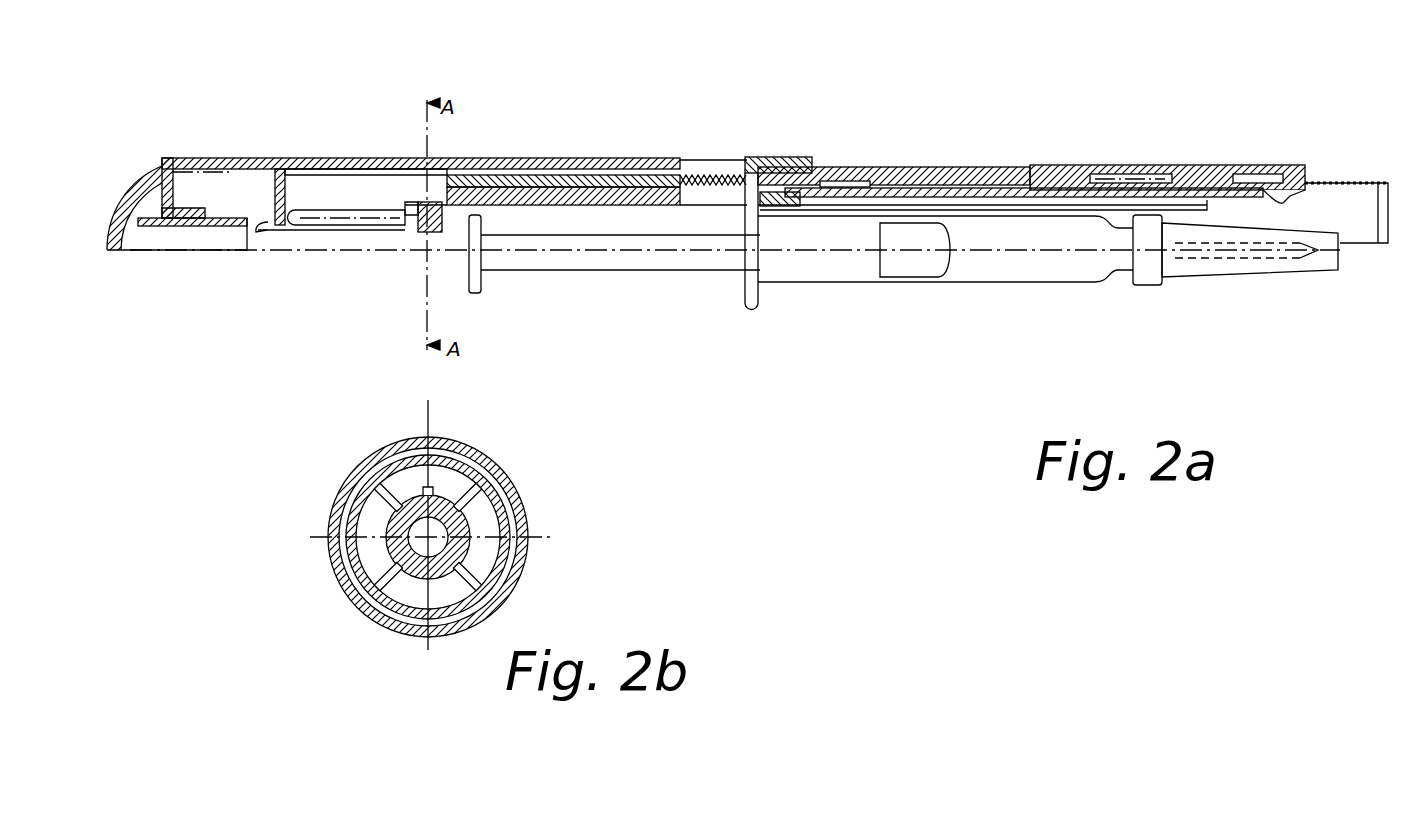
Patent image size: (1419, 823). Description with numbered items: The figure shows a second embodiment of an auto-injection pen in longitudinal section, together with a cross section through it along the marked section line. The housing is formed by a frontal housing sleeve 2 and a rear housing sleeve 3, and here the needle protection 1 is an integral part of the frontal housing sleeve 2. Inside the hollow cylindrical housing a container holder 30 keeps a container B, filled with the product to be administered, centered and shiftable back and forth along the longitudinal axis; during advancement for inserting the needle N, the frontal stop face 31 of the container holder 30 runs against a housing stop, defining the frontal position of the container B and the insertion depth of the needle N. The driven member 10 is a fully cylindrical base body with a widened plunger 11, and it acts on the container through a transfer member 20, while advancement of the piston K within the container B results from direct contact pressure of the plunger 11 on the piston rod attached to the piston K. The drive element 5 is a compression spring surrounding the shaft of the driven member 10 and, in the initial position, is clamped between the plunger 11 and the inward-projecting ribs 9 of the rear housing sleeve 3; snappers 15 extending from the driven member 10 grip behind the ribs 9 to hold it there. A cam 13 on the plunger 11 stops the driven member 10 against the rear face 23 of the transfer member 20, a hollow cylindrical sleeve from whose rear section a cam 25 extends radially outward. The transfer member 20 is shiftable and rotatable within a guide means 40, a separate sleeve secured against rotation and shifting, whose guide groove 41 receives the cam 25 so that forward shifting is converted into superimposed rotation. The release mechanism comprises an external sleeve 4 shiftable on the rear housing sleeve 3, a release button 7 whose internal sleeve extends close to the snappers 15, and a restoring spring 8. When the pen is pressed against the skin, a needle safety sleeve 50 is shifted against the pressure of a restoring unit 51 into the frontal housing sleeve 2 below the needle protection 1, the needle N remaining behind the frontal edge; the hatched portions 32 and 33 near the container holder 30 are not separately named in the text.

In FIG. 2A, the needle protection 1 is at (1244, 167).
In FIG. 2A, the frontal housing sleeve 2 is at (837, 173).
In FIG. 2A, the rear housing sleeve 3 is at (343, 160).
In FIG. 2B, the rear housing sleeve 3 is at (500, 480).
In FIG. 2A, the external sleeve 4 is at (197, 158).
In FIG. 2B, the external sleeve 4 is at (518, 500).
In FIG. 2A, the drive element 5 is at (403, 200).
In FIG. 2A, the release button 7 is at (118, 232).
In FIG. 2A, the restoring spring 8 is at (170, 158).
In FIG. 2A, the ribs 9 is at (253, 168).
In FIG. 2A, the driven member 10 is at (362, 226).
In FIG. 2A, the plunger 11 is at (412, 233).
In FIG. 2B, the plunger 11 is at (385, 540).
In FIG. 2B, the cam 13 is at (432, 492).
In FIG. 2A, the snappers 15 is at (256, 232).
In FIG. 2A, the transfer member 20 is at (593, 183).
In FIG. 2A, the rear face 23 is at (421, 225).
In FIG. 2A, the cam 25 is at (454, 220).
In FIG. 2A, the container holder 30 is at (788, 198).
In FIG. 2A, the frontal stop face 31 is at (833, 207).
In FIG. 2A, the flange 32 is at (767, 193).
In FIG. 2A, the slot 33 is at (942, 190).
In FIG. 2A, the guide means 40 is at (542, 180).
In FIG. 2A, the guide groove 41 is at (475, 185).
In FIG. 2A, the needle safety sleeve 50 is at (1333, 183).
In FIG. 2A, the restoring unit 51 is at (1175, 183).
In FIG. 2A, the container B is at (1039, 290).
In FIG. 2A, the piston K is at (917, 265).
In FIG. 2A, the needle N is at (1216, 255).